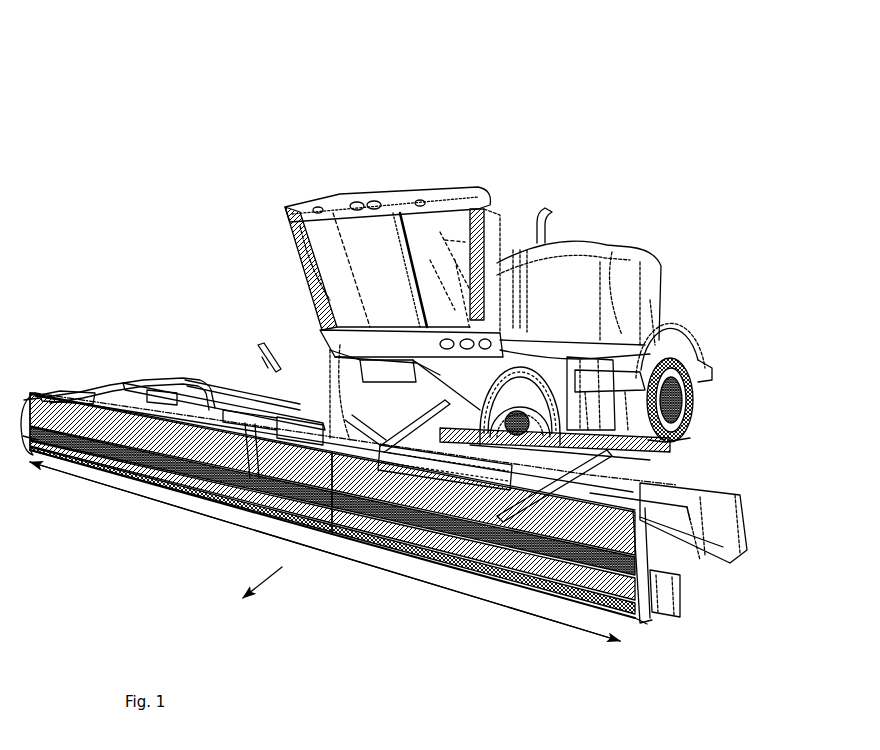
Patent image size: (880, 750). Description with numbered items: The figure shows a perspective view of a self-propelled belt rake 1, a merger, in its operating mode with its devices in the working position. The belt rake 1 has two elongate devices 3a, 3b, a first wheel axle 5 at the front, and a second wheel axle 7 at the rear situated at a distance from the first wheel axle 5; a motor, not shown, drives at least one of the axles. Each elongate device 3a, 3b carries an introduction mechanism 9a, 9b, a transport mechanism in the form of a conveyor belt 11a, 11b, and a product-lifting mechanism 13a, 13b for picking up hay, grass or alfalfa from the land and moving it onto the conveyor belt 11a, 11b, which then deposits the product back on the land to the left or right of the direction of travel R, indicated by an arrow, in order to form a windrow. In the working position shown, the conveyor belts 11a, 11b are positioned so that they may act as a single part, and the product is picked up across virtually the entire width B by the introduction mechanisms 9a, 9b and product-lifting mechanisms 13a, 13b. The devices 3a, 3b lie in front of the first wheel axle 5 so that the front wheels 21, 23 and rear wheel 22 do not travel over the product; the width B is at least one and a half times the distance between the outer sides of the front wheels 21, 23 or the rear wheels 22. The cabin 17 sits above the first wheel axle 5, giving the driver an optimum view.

The self-propelled belt rake 1 is at (534, 128).
The elongate device 3a is at (418, 597).
The elongate device 3b is at (97, 499).
The first wheel axle 5 is at (309, 359).
The second wheel axle 7 is at (699, 433).
The introduction mechanism 9a is at (661, 630).
The introduction mechanism 9b is at (32, 379).
The conveyor belt 11a is at (721, 570).
The conveyor belt 11b is at (108, 384).
The product-lifting mechanism 13a is at (685, 612).
The product-lifting mechanism 13b is at (58, 381).
The cabin 17 is at (336, 218).
The front wheel 21 is at (518, 362).
The rear wheel 22 is at (690, 356).
The front wheel 23 is at (262, 357).
The width B is at (325, 551).
The direction of travel R is at (262, 586).